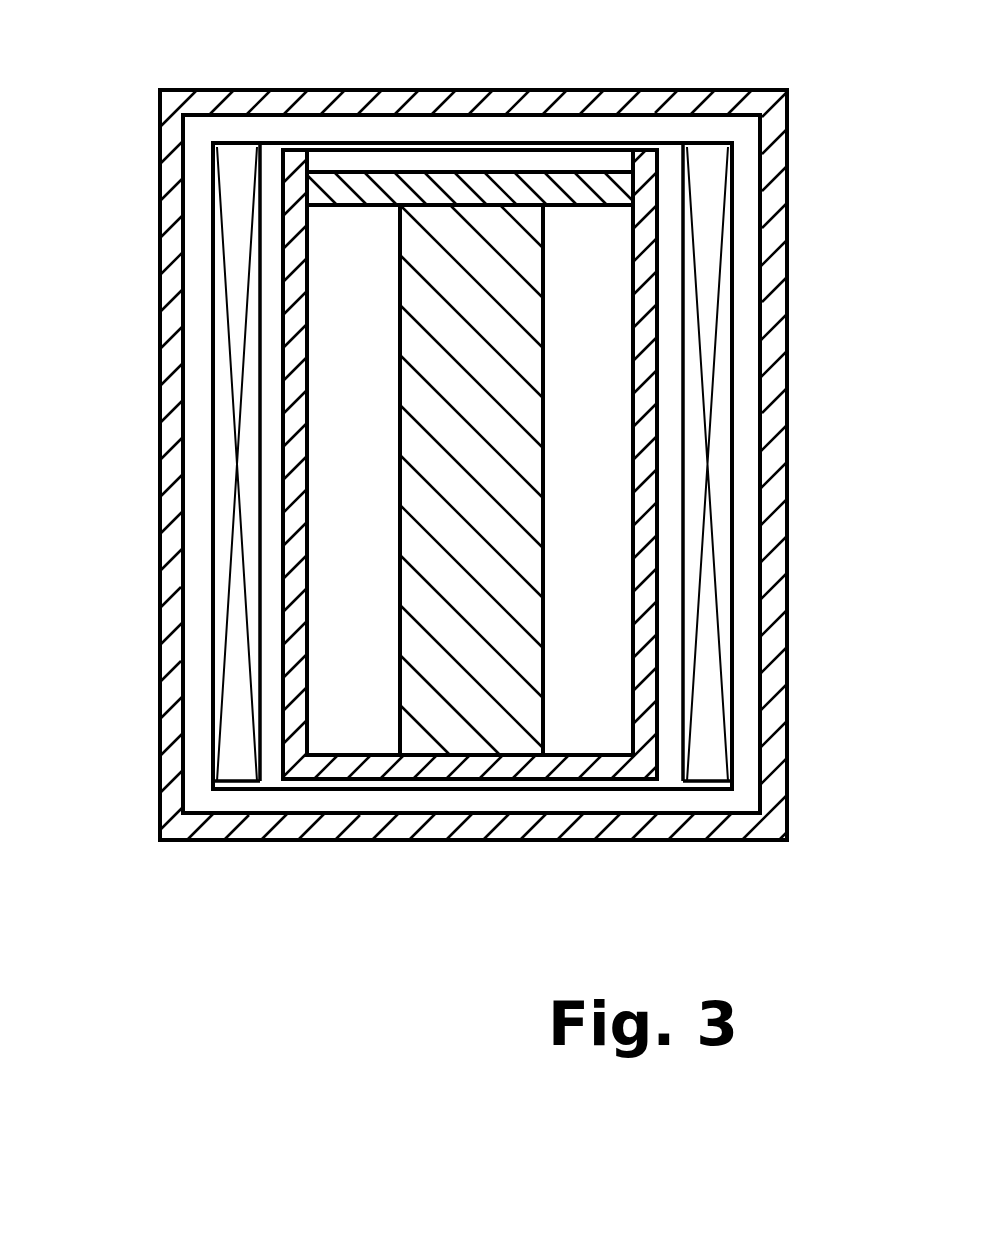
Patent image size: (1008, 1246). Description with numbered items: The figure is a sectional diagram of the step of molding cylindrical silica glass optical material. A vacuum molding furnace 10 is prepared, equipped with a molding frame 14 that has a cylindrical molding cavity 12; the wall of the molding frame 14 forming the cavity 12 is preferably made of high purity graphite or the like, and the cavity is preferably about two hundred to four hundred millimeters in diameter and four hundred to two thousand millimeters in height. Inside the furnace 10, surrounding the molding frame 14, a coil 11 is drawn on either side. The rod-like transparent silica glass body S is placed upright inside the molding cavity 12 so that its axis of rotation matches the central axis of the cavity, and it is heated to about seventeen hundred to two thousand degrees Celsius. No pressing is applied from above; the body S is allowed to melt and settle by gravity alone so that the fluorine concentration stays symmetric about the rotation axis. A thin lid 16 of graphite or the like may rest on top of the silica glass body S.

The vacuum molding furnace 10 is at (785, 224).
The coil 11 is at (720, 438).
The cylindrical molding cavity 12 is at (598, 643).
The molding frame 14 is at (297, 555).
The thin lid 16 is at (355, 183).
The rod-like transparent silica glass body S is at (447, 760).